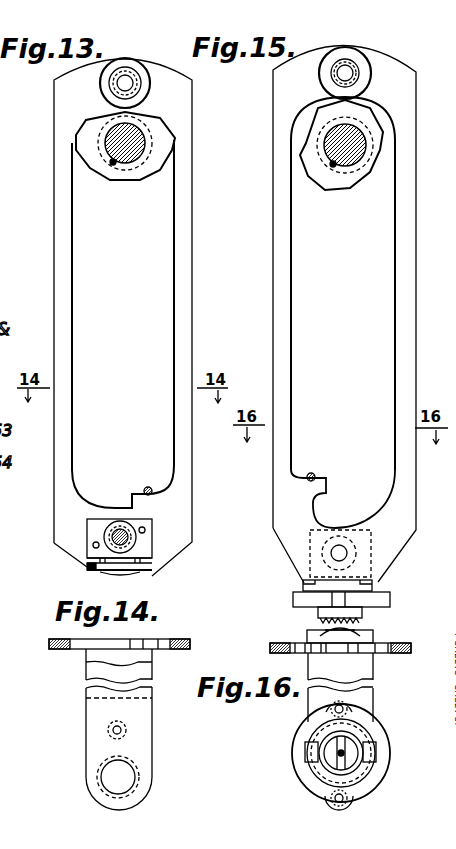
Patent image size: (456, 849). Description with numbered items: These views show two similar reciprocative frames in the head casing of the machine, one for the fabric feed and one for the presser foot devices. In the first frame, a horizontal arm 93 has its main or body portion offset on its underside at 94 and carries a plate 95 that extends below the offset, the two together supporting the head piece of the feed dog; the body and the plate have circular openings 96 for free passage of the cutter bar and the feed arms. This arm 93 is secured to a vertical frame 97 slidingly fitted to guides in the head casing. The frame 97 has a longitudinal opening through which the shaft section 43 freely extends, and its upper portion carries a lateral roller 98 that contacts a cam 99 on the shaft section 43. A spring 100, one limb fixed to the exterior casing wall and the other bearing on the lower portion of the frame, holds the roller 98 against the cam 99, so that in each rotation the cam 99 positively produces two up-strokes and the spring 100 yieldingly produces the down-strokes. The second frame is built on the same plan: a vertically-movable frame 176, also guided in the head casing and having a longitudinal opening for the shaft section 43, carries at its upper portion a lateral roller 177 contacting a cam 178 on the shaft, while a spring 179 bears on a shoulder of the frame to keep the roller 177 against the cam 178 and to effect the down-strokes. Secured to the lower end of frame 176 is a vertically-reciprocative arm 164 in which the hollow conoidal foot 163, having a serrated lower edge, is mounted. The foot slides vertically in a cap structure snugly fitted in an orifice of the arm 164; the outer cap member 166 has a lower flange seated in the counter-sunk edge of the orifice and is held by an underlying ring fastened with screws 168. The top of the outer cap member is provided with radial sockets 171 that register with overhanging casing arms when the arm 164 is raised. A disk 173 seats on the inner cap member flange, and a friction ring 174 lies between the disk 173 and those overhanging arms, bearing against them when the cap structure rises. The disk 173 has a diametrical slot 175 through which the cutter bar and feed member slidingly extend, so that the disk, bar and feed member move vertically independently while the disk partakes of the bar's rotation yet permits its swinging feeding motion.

In FIG. 13, the shaft section 43 is at (108, 148).
In FIG. 15, the shaft section 43 is at (340, 145).
In FIG. 13, the horizontal arm 93 is at (152, 545).
In FIG. 14, the horizontal arm 93 is at (86, 731).
In FIG. 13, the offset 94 is at (87, 566).
In FIG. 13, the plate 95 is at (152, 573).
In FIG. 14, the circular openings 96 is at (110, 777).
In FIG. 13, the vertical frame 97 is at (181, 268).
In FIG. 14, the vertical frame 97 is at (61, 650).
In FIG. 13, the lateral roller 98 is at (100, 86).
In FIG. 13, the cam 99 is at (121, 182).
In FIG. 13, the spring 100 is at (146, 487).
In FIG. 15, the hollow conoidal foot 163 is at (318, 612).
In FIG. 15, the vertically-reciprocative arm 164 is at (380, 600).
In FIG. 16, the vertically-reciprocative arm 164 is at (315, 700).
In FIG. 15, the outer cap member 166 is at (330, 587).
In FIG. 15, the screws 168 is at (362, 612).
In FIG. 16, the screws 168 is at (342, 708).
In FIG. 15, the radial sockets 171 is at (304, 582).
In FIG. 16, the radial sockets 171 is at (308, 752).
In FIG. 16, the disk 173 is at (350, 748).
In FIG. 16, the friction ring 174 is at (310, 756).
In FIG. 16, the diametrical slot 175 is at (325, 772).
In FIG. 15, the vertically-movable frame 176 is at (281, 290).
In FIG. 16, the vertically-movable frame 176 is at (272, 647).
In FIG. 15, the lateral roller 177 is at (318, 76).
In FIG. 15, the cam 178 is at (345, 186).
In FIG. 15, the spring 179 is at (315, 475).